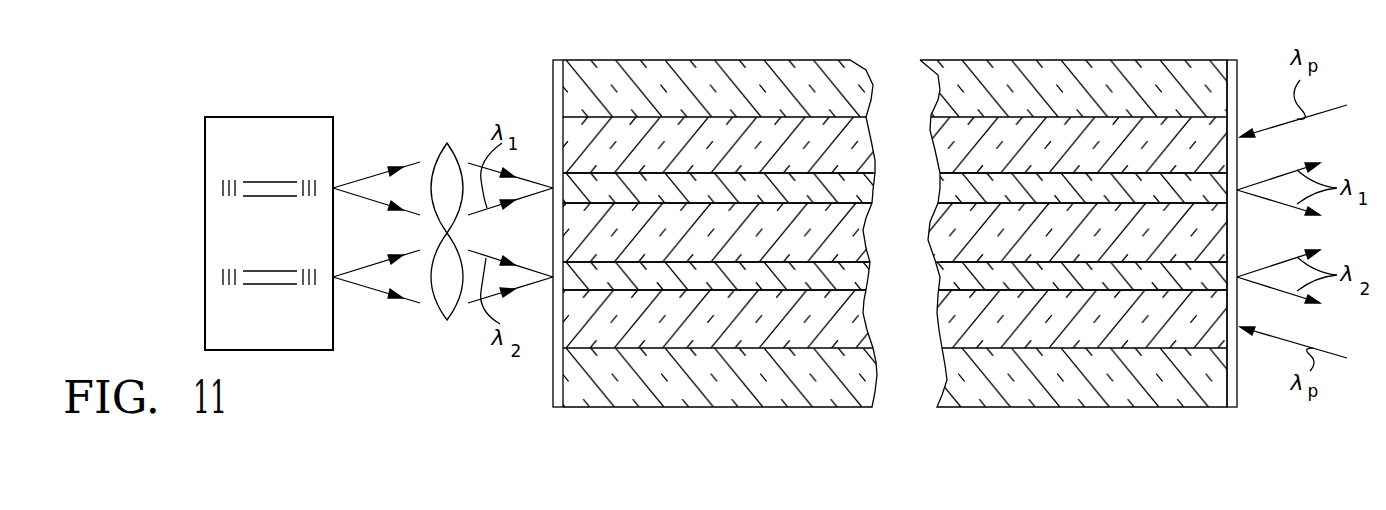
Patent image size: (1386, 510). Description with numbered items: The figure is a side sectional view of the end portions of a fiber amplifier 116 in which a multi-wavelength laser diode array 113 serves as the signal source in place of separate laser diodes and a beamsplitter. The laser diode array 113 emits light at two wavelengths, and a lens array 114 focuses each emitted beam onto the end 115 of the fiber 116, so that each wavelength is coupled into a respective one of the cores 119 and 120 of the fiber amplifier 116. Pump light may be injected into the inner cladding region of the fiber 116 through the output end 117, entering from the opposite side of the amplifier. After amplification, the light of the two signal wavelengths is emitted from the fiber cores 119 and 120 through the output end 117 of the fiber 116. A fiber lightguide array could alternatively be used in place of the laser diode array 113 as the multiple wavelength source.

The multi-wavelength laser diode array 113 is at (255, 117).
The lens array 114 is at (445, 143).
The end of the fiber 115 is at (553, 60).
The fiber amplifier 116 is at (895, 204).
The output end 117 is at (1232, 60).
The core 119 is at (962, 191).
The core 120 is at (962, 278).